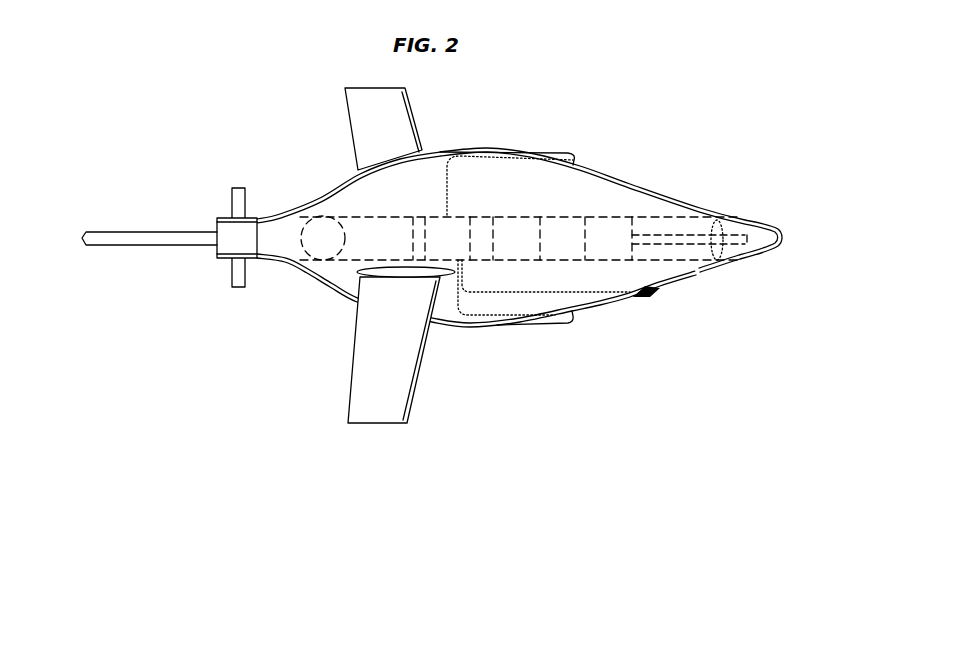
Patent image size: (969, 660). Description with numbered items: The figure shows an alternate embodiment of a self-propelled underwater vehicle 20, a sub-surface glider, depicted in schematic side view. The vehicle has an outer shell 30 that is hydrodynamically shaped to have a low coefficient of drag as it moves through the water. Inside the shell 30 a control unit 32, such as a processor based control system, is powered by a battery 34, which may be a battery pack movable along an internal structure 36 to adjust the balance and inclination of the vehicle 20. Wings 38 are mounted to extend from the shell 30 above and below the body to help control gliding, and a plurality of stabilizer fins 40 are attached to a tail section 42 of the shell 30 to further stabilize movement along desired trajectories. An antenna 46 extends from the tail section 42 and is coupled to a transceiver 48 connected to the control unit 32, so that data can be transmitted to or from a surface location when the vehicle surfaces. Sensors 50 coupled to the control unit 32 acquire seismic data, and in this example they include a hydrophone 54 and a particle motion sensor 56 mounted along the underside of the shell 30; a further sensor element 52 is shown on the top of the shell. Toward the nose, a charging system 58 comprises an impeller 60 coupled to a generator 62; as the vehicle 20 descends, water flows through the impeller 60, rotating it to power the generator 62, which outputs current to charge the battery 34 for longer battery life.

The self-propelled underwater vehicle 20 is at (432, 253).
The outer shell 30 is at (683, 285).
The control unit 32 is at (440, 225).
The battery 34 is at (512, 227).
The internal structure 36 is at (562, 223).
The wings 38 is at (415, 122).
The stabilizer fins 40 is at (235, 277).
The tail section 42 is at (263, 247).
The antenna 46 is at (148, 230).
The transceiver 48 is at (412, 233).
The sensors 50 is at (555, 233).
The top fin 52 is at (573, 160).
The hydrophones 54 is at (568, 325).
The particle motion sensors 56 is at (647, 298).
The charging system 58 is at (698, 273).
The impeller 60 is at (717, 222).
The generator 62 is at (618, 225).